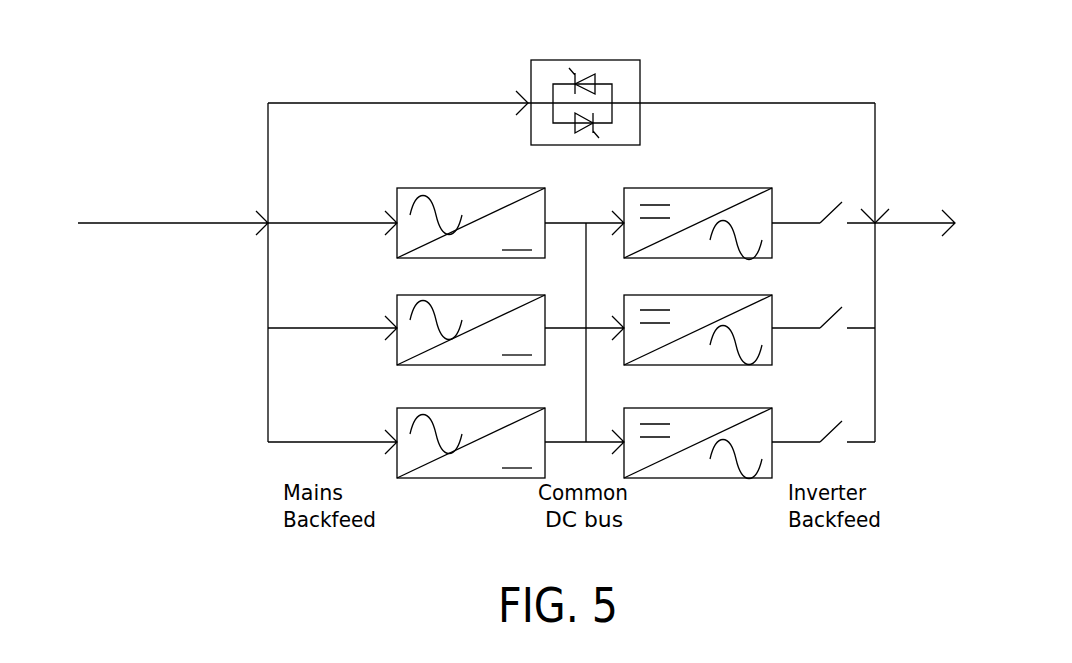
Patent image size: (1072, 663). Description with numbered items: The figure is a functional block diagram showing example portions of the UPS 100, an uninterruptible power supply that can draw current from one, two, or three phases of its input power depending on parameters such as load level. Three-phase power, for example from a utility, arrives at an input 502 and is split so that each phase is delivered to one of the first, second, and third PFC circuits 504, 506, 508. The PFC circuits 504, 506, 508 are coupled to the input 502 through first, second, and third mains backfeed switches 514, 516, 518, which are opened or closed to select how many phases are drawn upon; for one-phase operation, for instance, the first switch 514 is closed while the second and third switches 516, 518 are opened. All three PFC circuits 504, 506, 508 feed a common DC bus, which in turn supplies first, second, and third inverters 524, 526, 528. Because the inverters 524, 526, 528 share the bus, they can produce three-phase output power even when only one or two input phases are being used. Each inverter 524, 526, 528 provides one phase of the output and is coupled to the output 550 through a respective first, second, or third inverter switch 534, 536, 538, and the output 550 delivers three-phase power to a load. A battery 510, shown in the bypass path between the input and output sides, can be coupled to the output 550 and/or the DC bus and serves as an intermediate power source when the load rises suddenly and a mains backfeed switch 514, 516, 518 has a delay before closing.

The UPS 100 is at (948, 378).
The input 502 is at (110, 258).
The first PFC circuit 504 is at (500, 188).
The second PFC circuit 506 is at (500, 295).
The third PFC circuit 508 is at (445, 478).
The battery 510 is at (575, 60).
The first mains backfeed switch 514 is at (318, 222).
The second mains backfeed switch 516 is at (318, 327).
The third mains backfeed switch 518 is at (318, 441).
The first inverter 524 is at (721, 188).
The second inverter 526 is at (722, 295).
The third inverter 528 is at (705, 478).
The first inverter switch 534 is at (843, 204).
The second inverter switch 536 is at (843, 309).
The third inverter switch 538 is at (843, 423).
The output 550 is at (985, 192).